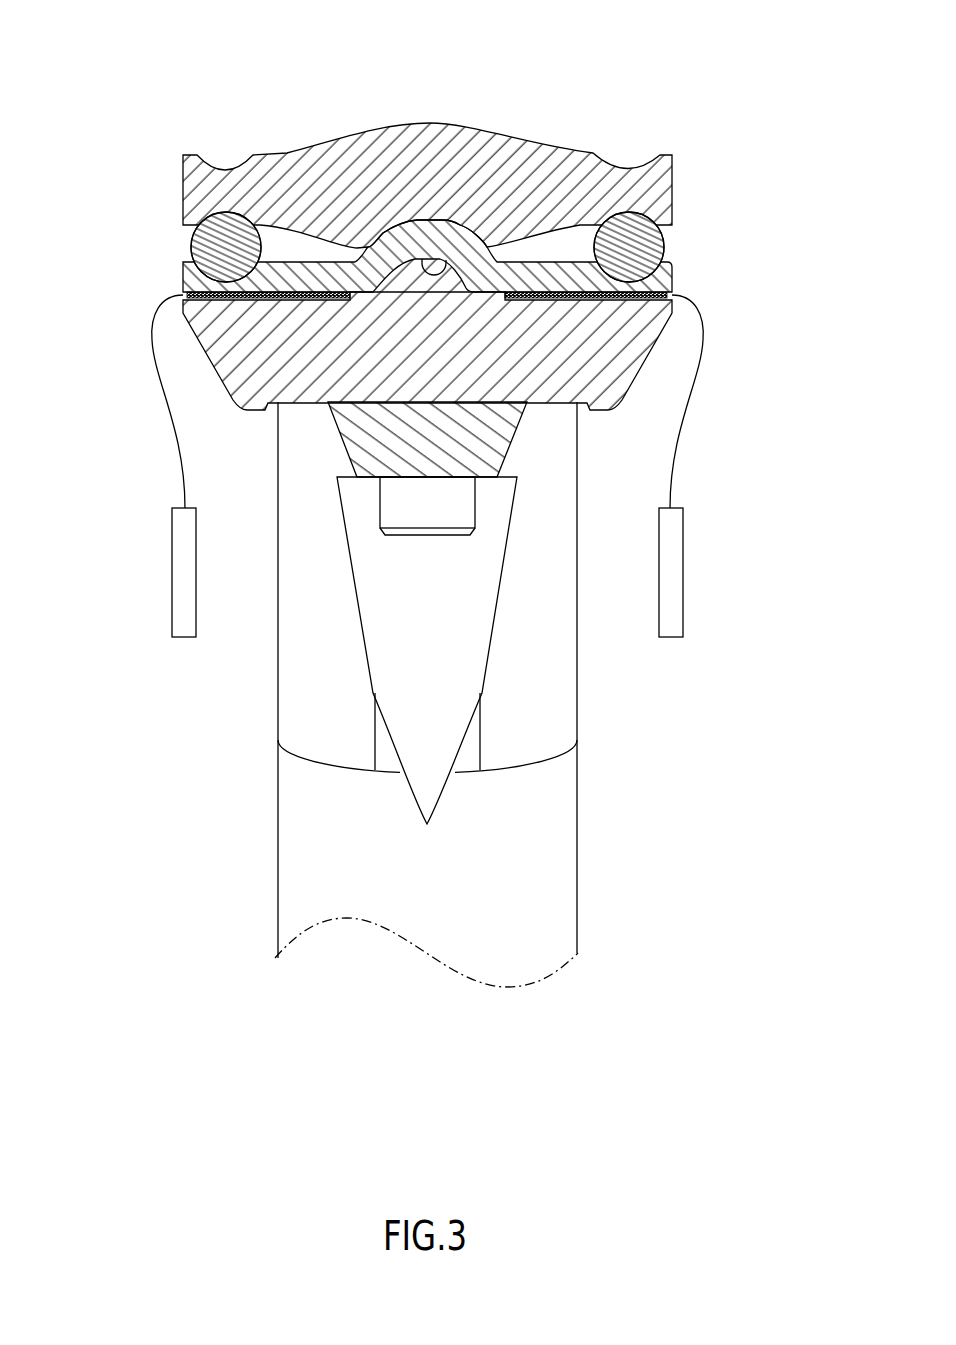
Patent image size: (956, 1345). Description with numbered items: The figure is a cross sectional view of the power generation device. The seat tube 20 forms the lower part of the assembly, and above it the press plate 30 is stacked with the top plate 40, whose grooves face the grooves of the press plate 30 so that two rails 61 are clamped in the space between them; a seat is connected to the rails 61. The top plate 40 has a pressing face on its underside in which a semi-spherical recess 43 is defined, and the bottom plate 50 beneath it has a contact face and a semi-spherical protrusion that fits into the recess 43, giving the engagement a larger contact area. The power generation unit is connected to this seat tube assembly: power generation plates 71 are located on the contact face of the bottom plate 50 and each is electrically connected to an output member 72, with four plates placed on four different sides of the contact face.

The seat tube 20 is at (295, 833).
The press plate 30 is at (523, 160).
The top plate 40 is at (673, 270).
The recess 43 is at (423, 255).
The bottom plate 50 is at (627, 350).
The rails 61 is at (197, 237).
The power generation plate 71 is at (238, 298).
The output member 72 is at (180, 580).